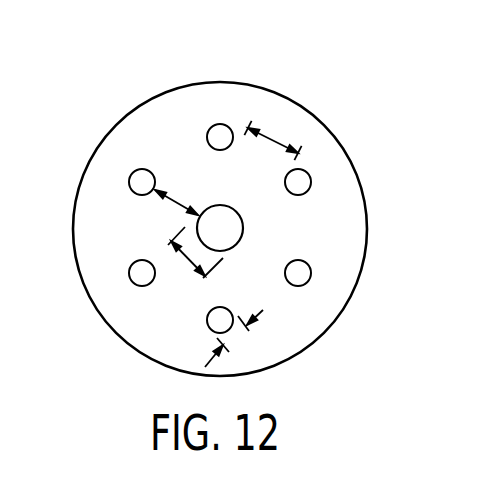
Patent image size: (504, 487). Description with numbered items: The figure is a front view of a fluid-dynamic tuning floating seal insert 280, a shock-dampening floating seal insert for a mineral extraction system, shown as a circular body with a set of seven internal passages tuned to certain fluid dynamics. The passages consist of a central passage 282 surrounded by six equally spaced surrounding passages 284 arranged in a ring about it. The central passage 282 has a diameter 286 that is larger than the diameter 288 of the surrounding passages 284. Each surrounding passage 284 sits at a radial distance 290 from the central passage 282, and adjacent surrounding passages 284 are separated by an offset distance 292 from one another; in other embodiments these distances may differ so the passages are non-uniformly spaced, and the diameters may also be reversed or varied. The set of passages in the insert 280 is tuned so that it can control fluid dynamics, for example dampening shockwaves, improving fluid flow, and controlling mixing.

The fluid-dynamic tuning floating seal insert 280 is at (313, 80).
The central passage 282 is at (222, 229).
The surrounding passages 284 is at (220, 137).
The diameter of central passage 286 is at (189, 258).
The diameter of surrounding passages 288 is at (263, 310).
The radial distance 290 is at (177, 203).
The offset distance 292 is at (273, 140).